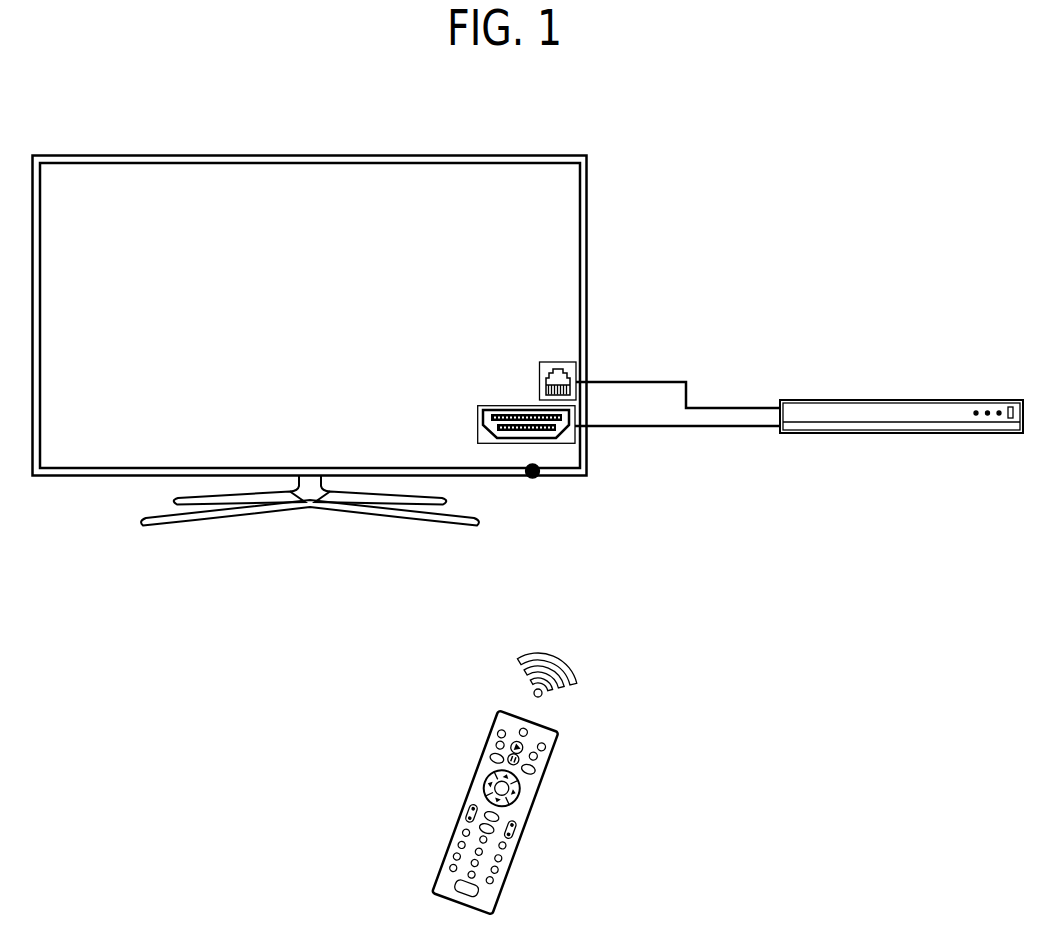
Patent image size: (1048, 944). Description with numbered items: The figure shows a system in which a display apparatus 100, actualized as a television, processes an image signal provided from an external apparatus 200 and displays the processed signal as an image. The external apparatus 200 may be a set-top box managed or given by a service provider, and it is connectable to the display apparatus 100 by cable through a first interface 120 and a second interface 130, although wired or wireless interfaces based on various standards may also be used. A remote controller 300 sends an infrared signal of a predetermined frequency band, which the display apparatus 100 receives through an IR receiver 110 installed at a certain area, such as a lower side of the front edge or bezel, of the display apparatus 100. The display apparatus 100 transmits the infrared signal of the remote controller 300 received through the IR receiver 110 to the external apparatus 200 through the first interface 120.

The display apparatus 100 is at (70, 476).
The IR receiver 110 is at (533, 479).
The first interface 120 is at (572, 366).
The second interface 130 is at (572, 437).
The external apparatus 200 is at (898, 435).
The remote controller 300 is at (523, 832).